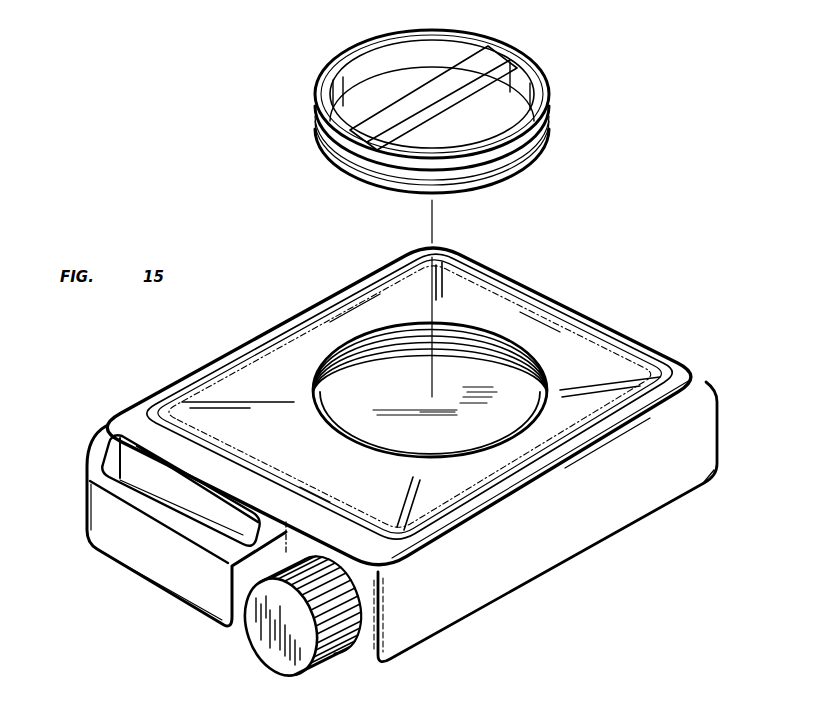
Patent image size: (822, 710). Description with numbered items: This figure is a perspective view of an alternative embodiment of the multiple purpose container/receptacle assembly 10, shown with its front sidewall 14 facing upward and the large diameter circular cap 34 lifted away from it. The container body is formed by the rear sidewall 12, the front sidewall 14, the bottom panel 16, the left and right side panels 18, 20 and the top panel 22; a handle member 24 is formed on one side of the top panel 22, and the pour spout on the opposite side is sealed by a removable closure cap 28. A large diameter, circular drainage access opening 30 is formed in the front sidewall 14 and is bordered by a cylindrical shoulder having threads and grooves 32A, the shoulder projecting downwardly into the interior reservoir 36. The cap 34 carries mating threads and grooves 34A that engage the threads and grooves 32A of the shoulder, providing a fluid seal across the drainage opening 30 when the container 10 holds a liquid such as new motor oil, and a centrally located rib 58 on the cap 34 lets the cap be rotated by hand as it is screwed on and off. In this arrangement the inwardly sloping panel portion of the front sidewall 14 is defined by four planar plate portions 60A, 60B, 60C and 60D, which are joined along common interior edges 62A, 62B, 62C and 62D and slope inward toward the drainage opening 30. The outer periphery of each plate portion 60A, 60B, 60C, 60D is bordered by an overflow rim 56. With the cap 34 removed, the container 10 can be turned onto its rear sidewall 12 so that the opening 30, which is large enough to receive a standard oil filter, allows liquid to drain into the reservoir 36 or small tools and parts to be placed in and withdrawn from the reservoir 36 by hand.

The multiple purpose container/receptacle assembly 10 is at (630, 274).
The rear sidewall 12 is at (462, 328).
The front sidewall 14 is at (140, 415).
The bottom panel 16 is at (668, 342).
The left side panel 18 is at (610, 512).
The right side panel 20 is at (360, 362).
The top panel 22 is at (216, 523).
The handle member 24 is at (123, 547).
The removable closure cap 28 is at (326, 652).
The circular drainage access opening 30 is at (532, 380).
The threads and grooves 32A is at (540, 336).
The large diameter circular cap 34 is at (440, 116).
The threads and grooves 34A is at (362, 178).
The reservoir 36 is at (494, 440).
The overflow rim 56 is at (640, 350).
The centrally located rib 58 is at (400, 100).
The planar plate portion 60A is at (600, 432).
The planar plate portion 60B is at (530, 320).
The planar plate portion 60C is at (352, 310).
The planar plate portion 60D is at (312, 494).
The common interior edge 62A is at (668, 368).
The common interior edge 62B is at (455, 285).
The common interior edge 62C is at (202, 400).
The common interior edge 62D is at (412, 525).